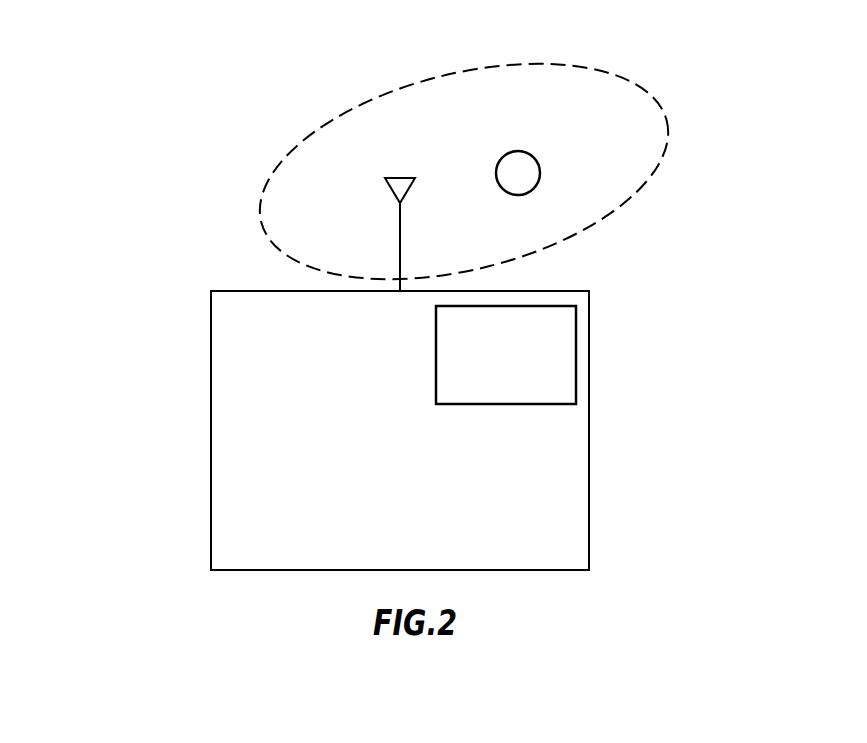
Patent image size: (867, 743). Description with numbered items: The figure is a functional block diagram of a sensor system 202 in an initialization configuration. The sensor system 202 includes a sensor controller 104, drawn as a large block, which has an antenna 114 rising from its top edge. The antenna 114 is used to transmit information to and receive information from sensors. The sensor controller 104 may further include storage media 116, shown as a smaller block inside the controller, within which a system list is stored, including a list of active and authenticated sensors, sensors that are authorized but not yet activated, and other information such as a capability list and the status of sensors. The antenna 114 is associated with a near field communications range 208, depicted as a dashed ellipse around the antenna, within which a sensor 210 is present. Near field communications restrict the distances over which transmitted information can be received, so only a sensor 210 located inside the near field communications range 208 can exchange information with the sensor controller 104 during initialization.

The sensor system 202 is at (166, 238).
The sensor controller 104 is at (211, 370).
The antenna 114 is at (400, 232).
The storage media 116 is at (436, 383).
The near field communications range 208 is at (632, 85).
The sensor 210 is at (527, 148).